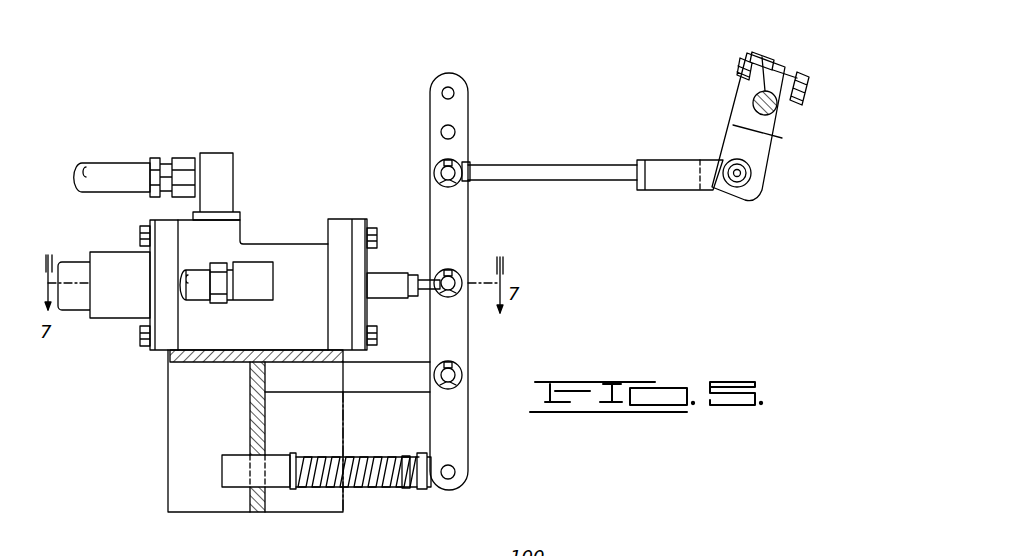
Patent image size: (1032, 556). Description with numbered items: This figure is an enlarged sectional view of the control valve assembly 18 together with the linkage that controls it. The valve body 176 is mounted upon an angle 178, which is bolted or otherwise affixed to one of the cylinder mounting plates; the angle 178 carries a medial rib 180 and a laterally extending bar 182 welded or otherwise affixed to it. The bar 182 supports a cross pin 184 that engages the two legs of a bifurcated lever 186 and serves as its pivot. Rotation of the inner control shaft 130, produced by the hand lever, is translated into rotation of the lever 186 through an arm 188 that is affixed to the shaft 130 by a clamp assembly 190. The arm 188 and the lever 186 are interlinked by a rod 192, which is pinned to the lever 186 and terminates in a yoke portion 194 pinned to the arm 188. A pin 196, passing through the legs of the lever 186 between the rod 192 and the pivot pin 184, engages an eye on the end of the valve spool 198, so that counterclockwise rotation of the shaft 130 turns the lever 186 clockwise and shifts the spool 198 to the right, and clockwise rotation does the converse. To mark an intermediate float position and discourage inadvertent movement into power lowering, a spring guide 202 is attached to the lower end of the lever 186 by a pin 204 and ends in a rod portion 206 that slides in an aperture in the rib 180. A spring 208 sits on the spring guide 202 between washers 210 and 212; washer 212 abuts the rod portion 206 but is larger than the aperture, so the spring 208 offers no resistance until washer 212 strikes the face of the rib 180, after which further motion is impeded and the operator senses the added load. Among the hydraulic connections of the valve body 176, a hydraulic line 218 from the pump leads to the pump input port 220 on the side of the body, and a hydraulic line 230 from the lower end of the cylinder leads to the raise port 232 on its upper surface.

The valve assembly 18 is at (382, 81).
The inner control shaft 130 is at (753, 99).
The valve body 176 is at (268, 250).
The angle 178 is at (185, 362).
The medial rib 180 is at (250, 416).
The laterally extending bar 182 is at (367, 382).
The cross pin 184 is at (466, 378).
The bifurcated lever 186 is at (457, 207).
The arm 188 is at (734, 138).
The clamp assembly 190 is at (759, 55).
The rod 192 is at (521, 172).
The yoke portion 194 is at (677, 181).
The pin 196 is at (438, 292).
The valve spool 198 is at (419, 283).
The spring guide 202 is at (393, 488).
The pin 204 is at (462, 473).
The rod portion 206 is at (225, 466).
The spring 208 is at (363, 488).
The washer 210 is at (423, 493).
The washer 212 is at (292, 489).
The hydraulic line 218 is at (192, 301).
The pump input port 220 is at (264, 279).
The hydraulic line 230 is at (108, 170).
The raise port 232 is at (238, 213).